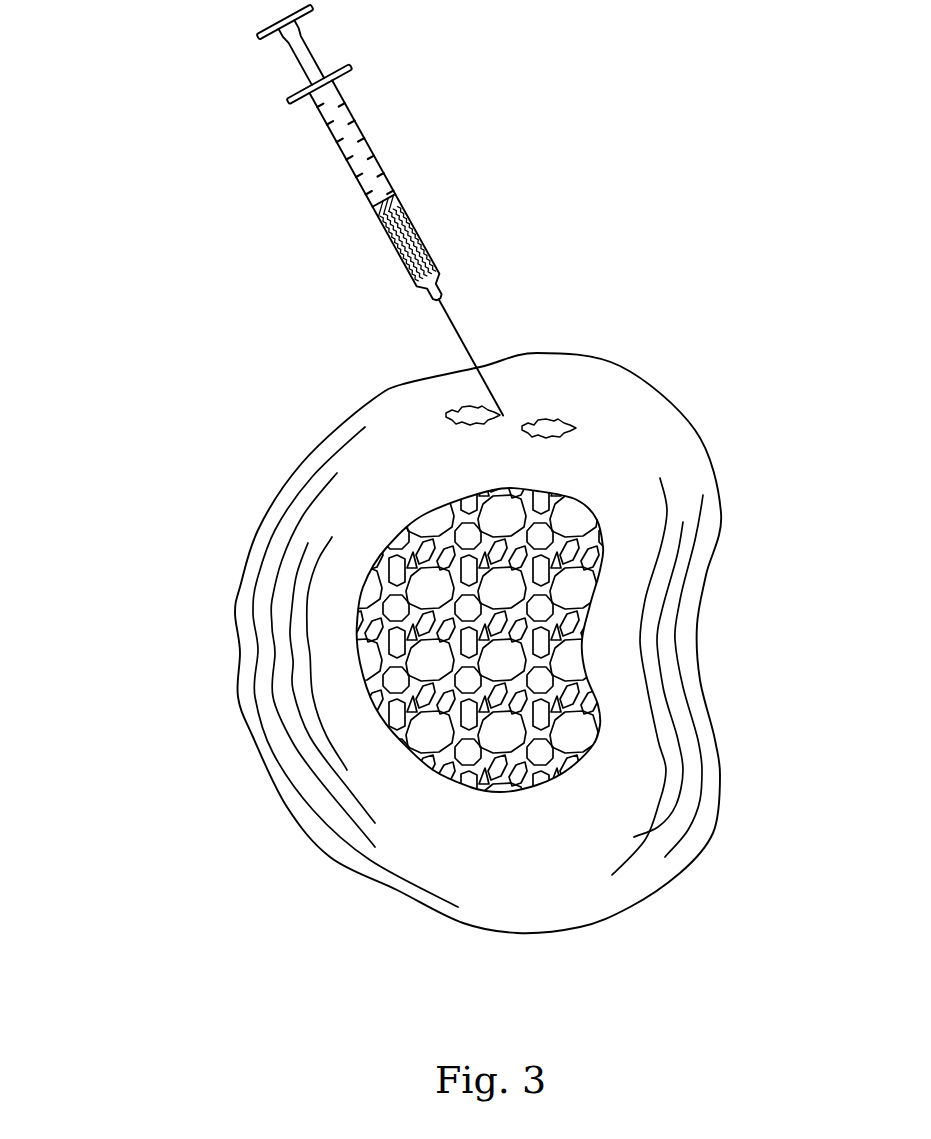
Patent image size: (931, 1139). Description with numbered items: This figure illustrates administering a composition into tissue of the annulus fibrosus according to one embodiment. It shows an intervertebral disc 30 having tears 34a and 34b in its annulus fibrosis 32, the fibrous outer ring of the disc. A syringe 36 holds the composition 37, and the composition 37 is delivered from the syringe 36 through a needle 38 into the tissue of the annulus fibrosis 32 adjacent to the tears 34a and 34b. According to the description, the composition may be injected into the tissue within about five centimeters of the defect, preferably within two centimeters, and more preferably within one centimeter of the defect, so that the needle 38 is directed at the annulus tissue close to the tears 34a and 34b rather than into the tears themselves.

The intervertebral disc 30 is at (237, 805).
The annulus fibrosis 32 is at (248, 475).
The tear 34a is at (462, 402).
The tear 34b is at (568, 410).
The syringe 36 is at (330, 160).
The composition 37 is at (420, 228).
The needle 38 is at (478, 333).